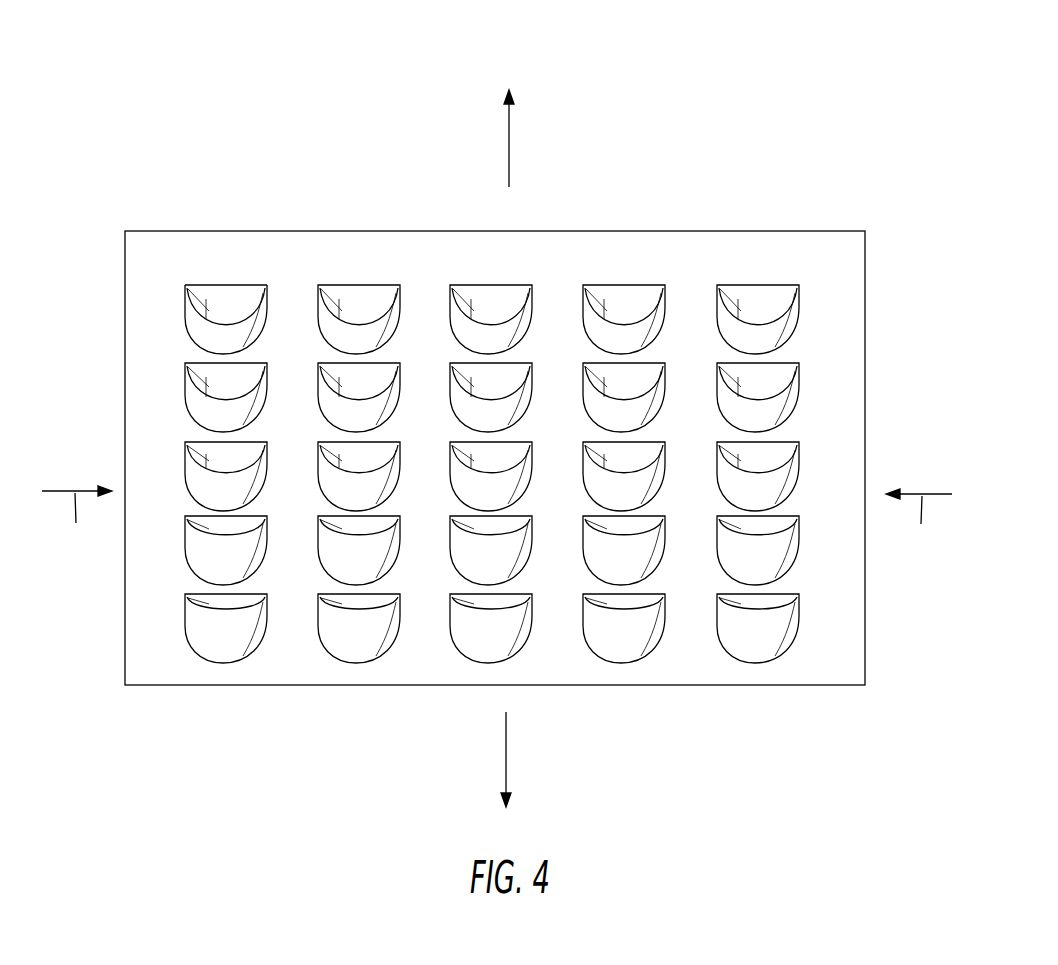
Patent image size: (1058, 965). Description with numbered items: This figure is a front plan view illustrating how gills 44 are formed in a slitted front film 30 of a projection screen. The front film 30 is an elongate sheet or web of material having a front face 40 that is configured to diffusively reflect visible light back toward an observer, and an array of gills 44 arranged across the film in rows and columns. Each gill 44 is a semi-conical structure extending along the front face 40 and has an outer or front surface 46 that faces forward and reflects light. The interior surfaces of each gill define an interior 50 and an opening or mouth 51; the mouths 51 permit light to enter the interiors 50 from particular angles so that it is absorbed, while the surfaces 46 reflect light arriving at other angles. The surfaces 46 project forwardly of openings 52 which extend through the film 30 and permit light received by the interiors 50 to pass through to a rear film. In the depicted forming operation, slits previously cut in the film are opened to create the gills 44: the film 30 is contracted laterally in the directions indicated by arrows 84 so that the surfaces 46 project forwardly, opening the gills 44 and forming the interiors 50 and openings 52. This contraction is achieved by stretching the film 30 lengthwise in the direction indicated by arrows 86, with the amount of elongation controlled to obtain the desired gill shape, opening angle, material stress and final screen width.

The front film 30 is at (495, 369).
The front face 40 is at (308, 262).
The gills 44 is at (429, 388).
The front surface 46 is at (263, 274).
The interior 50 is at (229, 284).
The mouth 51 is at (266, 285).
The openings 52 is at (244, 285).
The arrows 84 is at (497, 529).
The arrows 86 is at (509, 128).